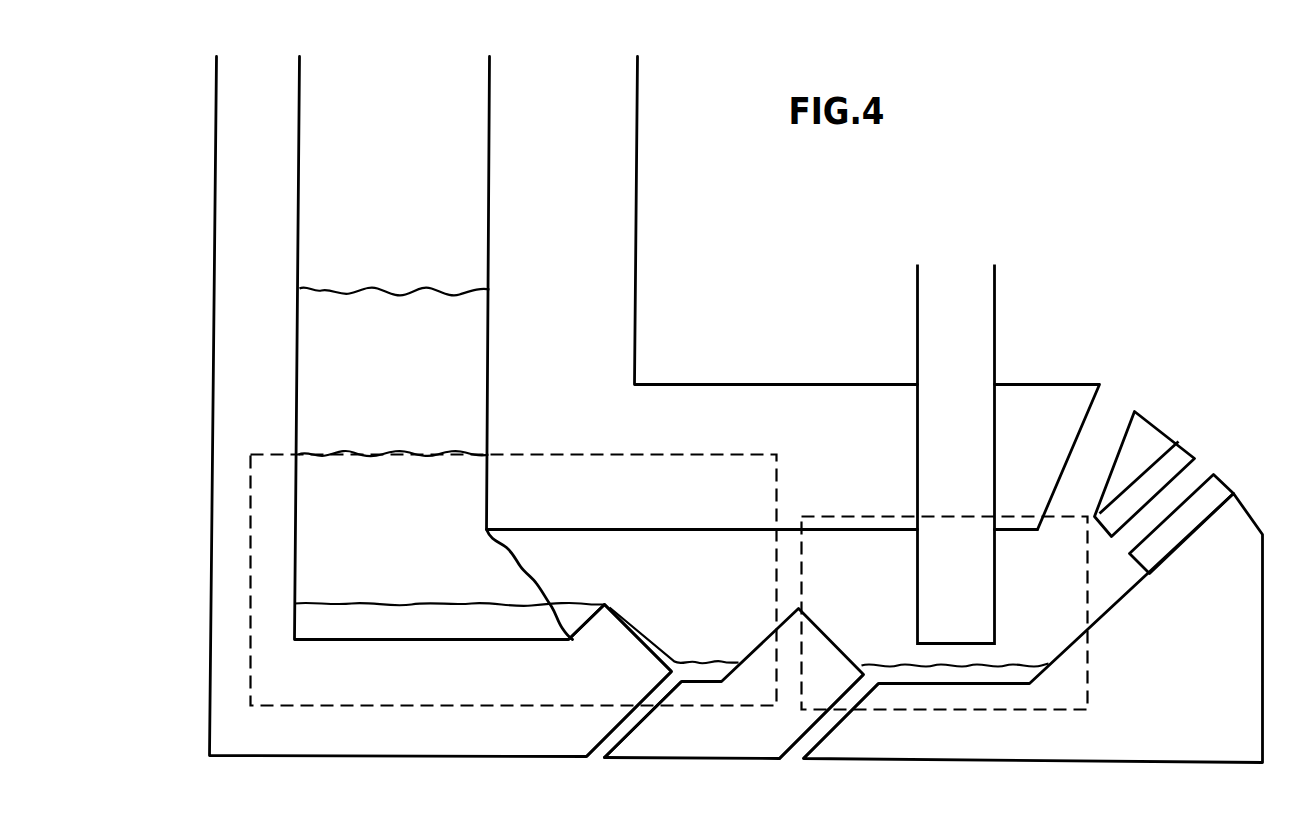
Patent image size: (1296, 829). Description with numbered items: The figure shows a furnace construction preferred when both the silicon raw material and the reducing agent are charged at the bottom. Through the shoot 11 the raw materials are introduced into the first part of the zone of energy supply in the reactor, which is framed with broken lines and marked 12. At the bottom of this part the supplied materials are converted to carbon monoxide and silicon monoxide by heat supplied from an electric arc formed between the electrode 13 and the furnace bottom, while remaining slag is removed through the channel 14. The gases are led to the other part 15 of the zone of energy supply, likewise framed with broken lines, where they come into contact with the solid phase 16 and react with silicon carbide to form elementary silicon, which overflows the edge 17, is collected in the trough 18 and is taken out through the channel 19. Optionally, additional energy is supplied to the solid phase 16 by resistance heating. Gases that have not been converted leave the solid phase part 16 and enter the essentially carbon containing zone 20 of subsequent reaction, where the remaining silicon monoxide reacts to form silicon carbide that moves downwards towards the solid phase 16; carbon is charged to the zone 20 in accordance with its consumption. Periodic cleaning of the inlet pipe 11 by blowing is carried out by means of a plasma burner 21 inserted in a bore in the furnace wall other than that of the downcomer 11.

The shoot 11 is at (1108, 413).
The first part of the zone of energy supply 12 is at (830, 515).
The electrode 13 is at (968, 448).
The channel 14 is at (818, 730).
The other part of the zone of energy supply 15 is at (575, 453).
The solid phase 16 is at (406, 545).
The edge 17 is at (601, 608).
The trough 18 is at (720, 630).
The channel 19 is at (623, 728).
The zone of subsequent reaction 20 is at (408, 383).
The plasma burner 21 is at (1212, 490).